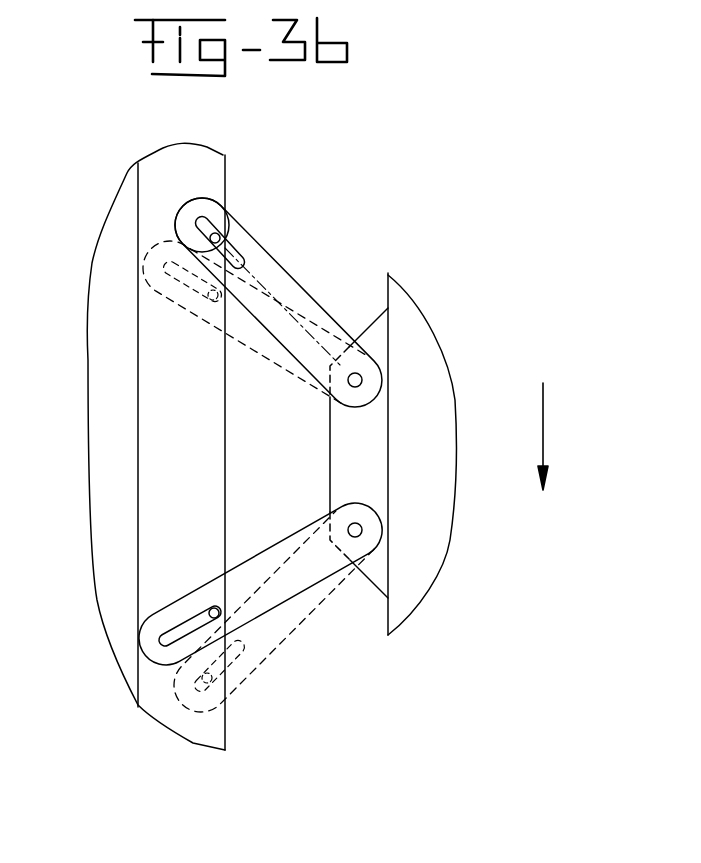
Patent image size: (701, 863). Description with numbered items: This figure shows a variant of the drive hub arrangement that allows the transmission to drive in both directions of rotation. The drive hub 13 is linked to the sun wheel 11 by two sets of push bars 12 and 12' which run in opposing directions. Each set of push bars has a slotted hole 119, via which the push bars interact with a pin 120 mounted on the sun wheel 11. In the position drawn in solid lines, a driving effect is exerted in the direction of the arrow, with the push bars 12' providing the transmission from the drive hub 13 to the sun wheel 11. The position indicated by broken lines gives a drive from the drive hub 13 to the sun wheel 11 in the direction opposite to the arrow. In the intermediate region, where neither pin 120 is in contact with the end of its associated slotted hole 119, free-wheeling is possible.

The sun wheel 11 is at (125, 437).
The push bars 12 is at (268, 302).
The push bars 12' is at (260, 602).
The drive hub 13 is at (433, 440).
The slotted hole 119 is at (197, 227).
The pin 120 is at (218, 237).